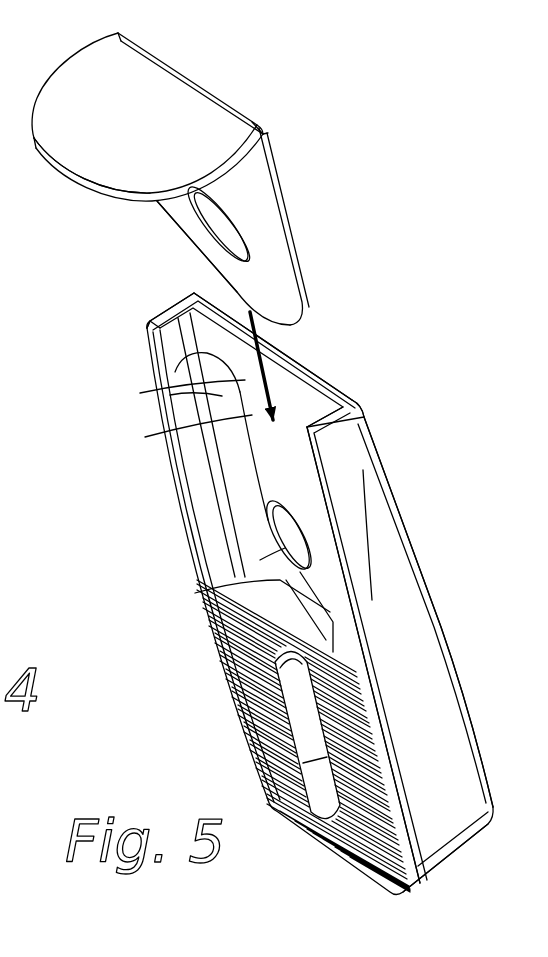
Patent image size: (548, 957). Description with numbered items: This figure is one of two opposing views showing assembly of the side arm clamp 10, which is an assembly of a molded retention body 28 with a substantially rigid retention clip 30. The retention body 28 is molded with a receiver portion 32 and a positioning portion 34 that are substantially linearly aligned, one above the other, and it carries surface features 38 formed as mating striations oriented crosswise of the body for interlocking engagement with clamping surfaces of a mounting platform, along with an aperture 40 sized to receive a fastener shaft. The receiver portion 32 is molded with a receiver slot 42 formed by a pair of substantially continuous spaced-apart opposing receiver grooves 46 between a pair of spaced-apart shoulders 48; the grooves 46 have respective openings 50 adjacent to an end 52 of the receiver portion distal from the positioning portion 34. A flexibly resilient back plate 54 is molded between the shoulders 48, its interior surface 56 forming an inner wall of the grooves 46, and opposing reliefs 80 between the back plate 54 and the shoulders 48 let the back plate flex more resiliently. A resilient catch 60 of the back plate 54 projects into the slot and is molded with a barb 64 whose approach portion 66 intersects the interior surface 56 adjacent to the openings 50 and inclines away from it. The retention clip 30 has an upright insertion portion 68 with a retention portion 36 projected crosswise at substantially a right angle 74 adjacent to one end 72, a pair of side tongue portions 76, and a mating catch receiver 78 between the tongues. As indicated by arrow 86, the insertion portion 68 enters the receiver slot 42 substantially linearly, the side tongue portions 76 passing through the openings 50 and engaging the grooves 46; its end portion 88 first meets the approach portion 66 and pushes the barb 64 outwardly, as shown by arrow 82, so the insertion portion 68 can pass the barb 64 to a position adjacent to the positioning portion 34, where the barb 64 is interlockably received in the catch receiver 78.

The side arm clamp 10 is at (402, 137).
The retention body 28 is at (450, 653).
The retention clip 30 is at (62, 174).
The receiver portion 32 is at (370, 480).
The positioning portion 34 is at (446, 832).
The retention portion 36 is at (146, 136).
The surface features 38 is at (223, 717).
The aperture 40 is at (318, 810).
The receiver slot 42 is at (172, 278).
The receiver grooves 46 is at (157, 432).
The shoulders 48 is at (180, 348).
The openings 50 is at (152, 316).
The end of receiver portion 52 is at (325, 379).
The back plate 54 is at (255, 432).
The interior surface 56 is at (293, 453).
The resilient catch 60 is at (267, 527).
The barb 64 is at (245, 585).
The approach portion 66 is at (297, 520).
The insertion portion 68 is at (281, 187).
The end of retention clip 72 is at (266, 128).
The right angle 74 is at (268, 198).
The side tongue portions 76 is at (162, 211).
The catch receiver 78 is at (240, 223).
The reliefs 80 is at (185, 492).
The outward push arrow 82 is at (290, 530).
The insertion direction arrow 86 is at (188, 399).
The end portion 88 is at (173, 373).